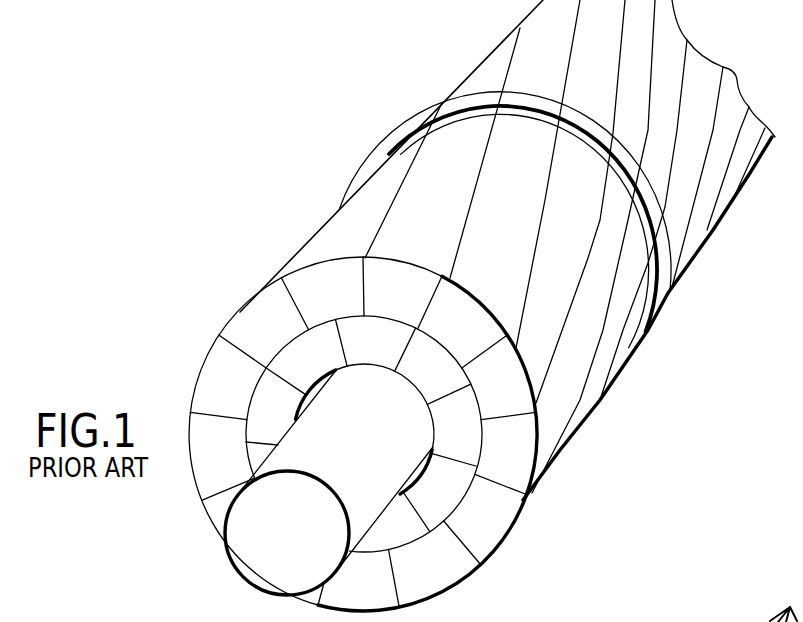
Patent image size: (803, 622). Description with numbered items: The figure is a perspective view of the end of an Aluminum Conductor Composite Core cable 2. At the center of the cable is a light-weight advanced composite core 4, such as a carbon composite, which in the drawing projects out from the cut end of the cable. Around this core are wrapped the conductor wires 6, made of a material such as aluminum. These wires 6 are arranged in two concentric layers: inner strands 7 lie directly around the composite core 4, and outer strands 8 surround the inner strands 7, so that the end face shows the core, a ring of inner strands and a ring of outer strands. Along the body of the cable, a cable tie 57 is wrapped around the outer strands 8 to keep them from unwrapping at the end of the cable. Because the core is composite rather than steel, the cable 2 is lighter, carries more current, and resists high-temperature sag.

The ACCC cable 2 is at (598, 374).
The composite core 4 is at (243, 580).
The conductor wires 6 is at (458, 578).
The inner strands 7 is at (262, 400).
The outer strands 8 is at (257, 312).
The cable tie 57 is at (425, 111).